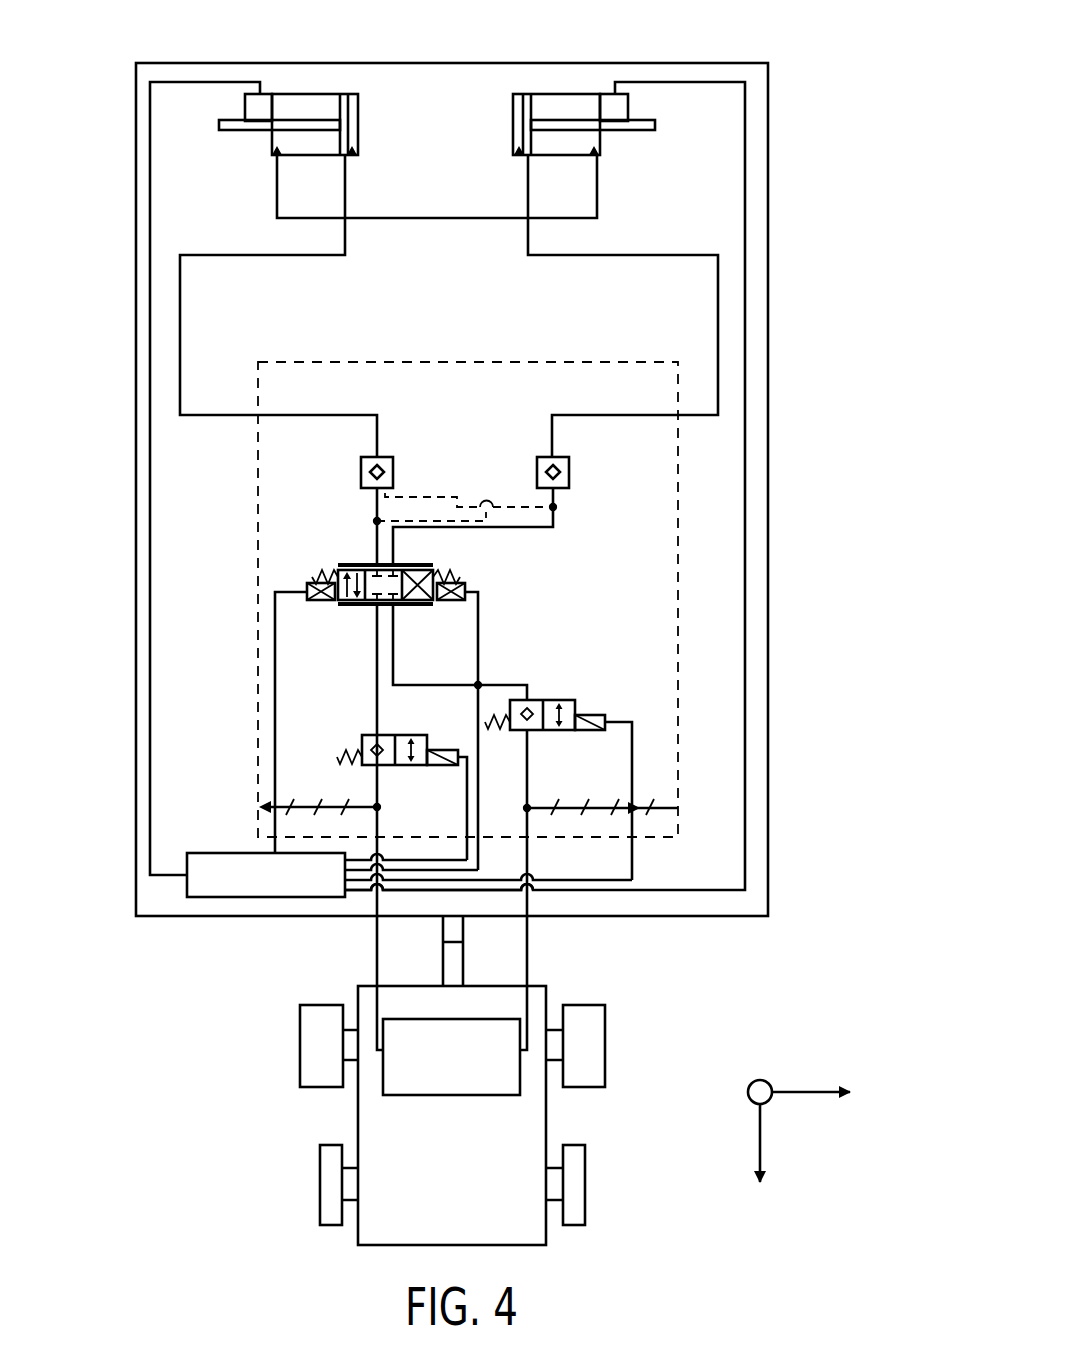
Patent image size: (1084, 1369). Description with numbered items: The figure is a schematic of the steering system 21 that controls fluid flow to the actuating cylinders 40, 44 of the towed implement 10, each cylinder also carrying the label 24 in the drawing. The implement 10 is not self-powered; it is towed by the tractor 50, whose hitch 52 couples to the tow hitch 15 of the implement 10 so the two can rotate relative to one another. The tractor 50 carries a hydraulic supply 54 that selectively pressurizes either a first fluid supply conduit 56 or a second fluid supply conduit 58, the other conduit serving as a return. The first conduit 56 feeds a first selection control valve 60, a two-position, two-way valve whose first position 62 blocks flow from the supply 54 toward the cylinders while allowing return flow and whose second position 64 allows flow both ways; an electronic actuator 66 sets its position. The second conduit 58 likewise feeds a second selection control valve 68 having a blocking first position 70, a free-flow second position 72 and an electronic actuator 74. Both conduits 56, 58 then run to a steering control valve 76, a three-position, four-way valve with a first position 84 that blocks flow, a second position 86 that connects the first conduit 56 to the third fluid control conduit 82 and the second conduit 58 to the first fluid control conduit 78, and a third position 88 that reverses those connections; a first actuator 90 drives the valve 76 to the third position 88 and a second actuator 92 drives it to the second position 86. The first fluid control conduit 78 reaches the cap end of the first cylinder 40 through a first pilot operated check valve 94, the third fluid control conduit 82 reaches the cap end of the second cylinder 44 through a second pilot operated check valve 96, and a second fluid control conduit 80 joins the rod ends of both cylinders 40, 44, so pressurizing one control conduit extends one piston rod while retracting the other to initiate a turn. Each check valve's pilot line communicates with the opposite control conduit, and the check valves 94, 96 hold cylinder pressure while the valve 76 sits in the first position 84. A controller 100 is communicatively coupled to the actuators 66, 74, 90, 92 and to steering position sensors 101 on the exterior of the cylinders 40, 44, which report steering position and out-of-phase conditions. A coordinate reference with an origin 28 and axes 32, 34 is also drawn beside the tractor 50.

The implement 10 is at (790, 865).
The tow hitch 15 is at (465, 928).
The steering system 21 is at (769, 405).
The hydraulic cylinder 24 is at (450, 80).
The origin 28 is at (752, 1084).
The lateral axis 32 is at (803, 1092).
The longitudinal axis 34 is at (762, 1135).
The first actuating cylinder 40 is at (305, 85).
The second actuating cylinder 44 is at (597, 85).
The tractor 50 is at (546, 1110).
The hitch 52 is at (442, 972).
The hydraulic supply 54 is at (450, 1097).
The first fluid supply conduit 56 is at (376, 947).
The second fluid supply conduit 58 is at (529, 947).
The first selection control valve 60 is at (363, 774).
The first position 62 is at (368, 766).
The second position 64 is at (402, 735).
The electronic actuator 66 is at (435, 766).
The second selection control valve 68 is at (581, 759).
The first position 70 is at (536, 732).
The second position 72 is at (566, 732).
The electronic actuator 74 is at (592, 715).
The steering control valve 76 is at (376, 663).
The first fluid control conduit 78 is at (210, 417).
The second fluid control conduit 80 is at (441, 218).
The third fluid control conduit 82 is at (700, 418).
The first position 84 is at (380, 620).
The second position 86 is at (413, 564).
The third position 88 is at (352, 606).
The first actuator 90 is at (310, 582).
The second actuator 92 is at (452, 606).
The first pilot operated check valve 94 is at (394, 472).
The second pilot operated check valve 96 is at (536, 472).
The controller 100 is at (257, 853).
The steering position sensor 101 is at (245, 105).